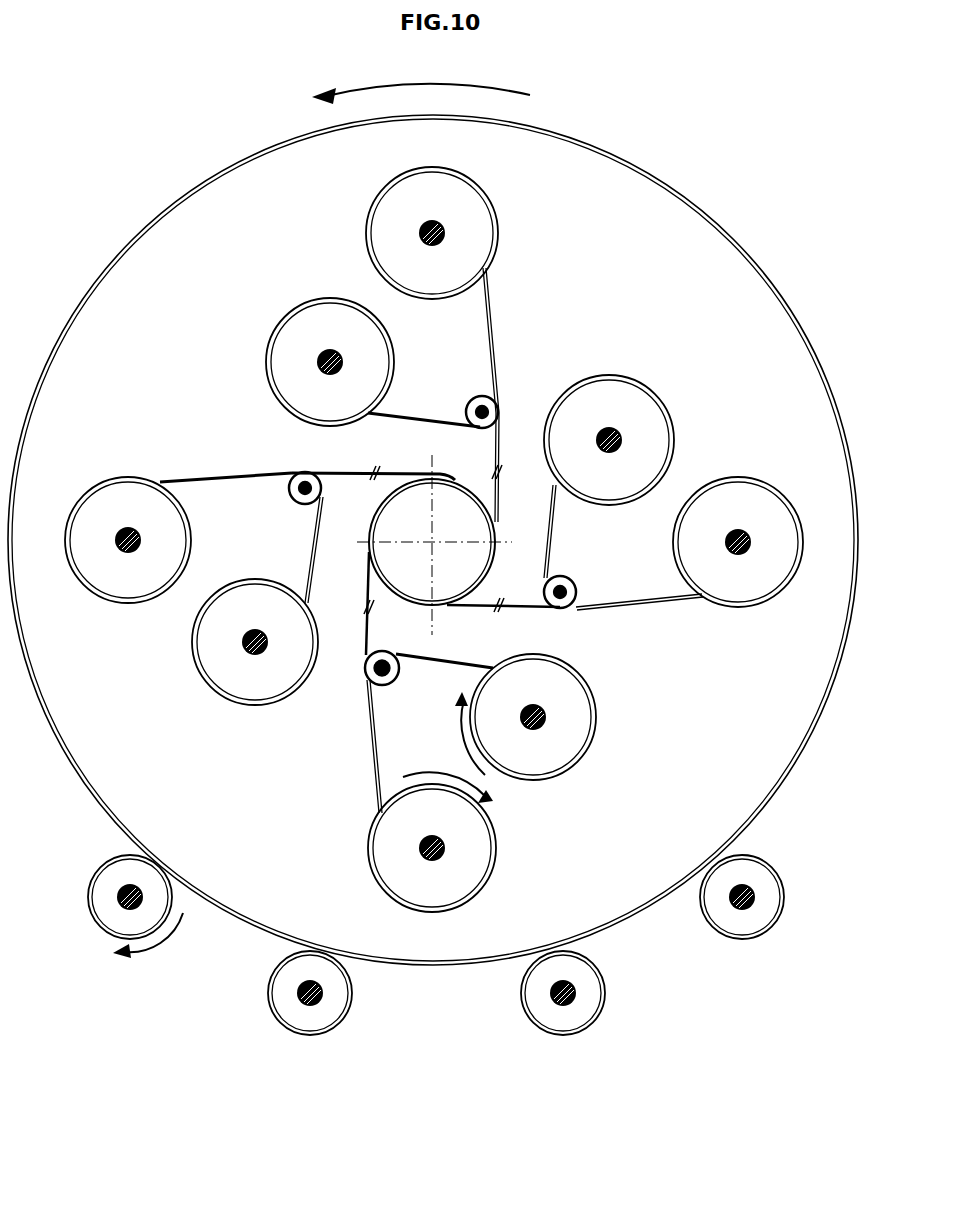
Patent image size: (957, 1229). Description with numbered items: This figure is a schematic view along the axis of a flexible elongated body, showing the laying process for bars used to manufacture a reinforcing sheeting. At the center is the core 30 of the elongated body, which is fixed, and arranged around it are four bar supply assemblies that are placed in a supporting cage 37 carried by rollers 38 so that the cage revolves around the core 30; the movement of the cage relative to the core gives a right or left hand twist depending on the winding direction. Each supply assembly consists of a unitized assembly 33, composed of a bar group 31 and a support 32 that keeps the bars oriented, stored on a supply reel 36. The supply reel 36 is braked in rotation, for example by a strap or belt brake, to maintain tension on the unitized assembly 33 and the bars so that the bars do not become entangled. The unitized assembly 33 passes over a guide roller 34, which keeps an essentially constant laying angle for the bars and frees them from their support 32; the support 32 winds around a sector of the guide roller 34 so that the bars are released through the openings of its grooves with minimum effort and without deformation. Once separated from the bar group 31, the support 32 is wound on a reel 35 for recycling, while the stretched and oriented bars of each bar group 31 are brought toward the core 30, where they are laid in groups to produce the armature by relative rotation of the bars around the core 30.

The core 30 is at (428, 538).
The bar group 31 is at (365, 613).
The support 32 is at (431, 655).
The unitized assembly 33 is at (367, 737).
The guide roller 34 is at (384, 684).
The reel 35 is at (525, 770).
The supply reel 36 is at (481, 846).
The supporting cage 37 is at (423, 948).
The rollers 38 is at (330, 1008).